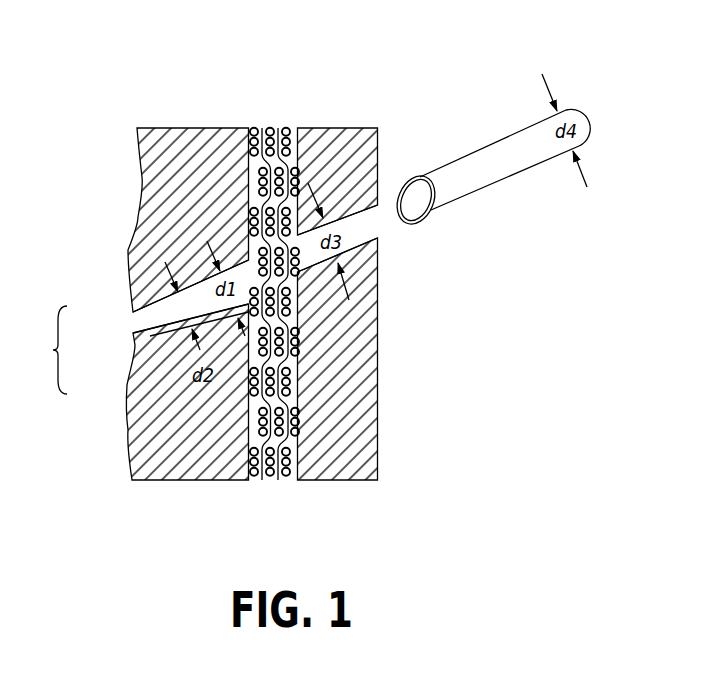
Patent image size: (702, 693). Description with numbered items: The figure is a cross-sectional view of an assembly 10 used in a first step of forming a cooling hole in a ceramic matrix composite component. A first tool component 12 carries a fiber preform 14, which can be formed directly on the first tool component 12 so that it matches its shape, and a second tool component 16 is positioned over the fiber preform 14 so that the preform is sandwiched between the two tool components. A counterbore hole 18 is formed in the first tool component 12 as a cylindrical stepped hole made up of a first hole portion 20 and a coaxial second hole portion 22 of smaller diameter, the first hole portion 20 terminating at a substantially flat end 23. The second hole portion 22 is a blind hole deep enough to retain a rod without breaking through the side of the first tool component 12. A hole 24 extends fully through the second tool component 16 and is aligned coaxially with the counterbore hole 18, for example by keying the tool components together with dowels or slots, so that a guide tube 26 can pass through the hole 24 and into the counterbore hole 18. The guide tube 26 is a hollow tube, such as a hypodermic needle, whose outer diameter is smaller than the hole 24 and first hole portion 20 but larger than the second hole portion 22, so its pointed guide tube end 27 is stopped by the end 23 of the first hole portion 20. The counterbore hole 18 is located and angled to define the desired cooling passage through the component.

The assembly 10 is at (130, 66).
The first tool component 12 is at (155, 206).
The fiber preform 14 is at (268, 482).
The second tool component 16 is at (367, 412).
The counterbore hole 18 is at (47, 350).
The first hole portion 20 is at (134, 312).
The second hole portion 22 is at (131, 369).
The end 23 is at (238, 316).
The hole 24 is at (357, 254).
The guide tube 26 is at (462, 177).
The guide tube end 27 is at (405, 227).